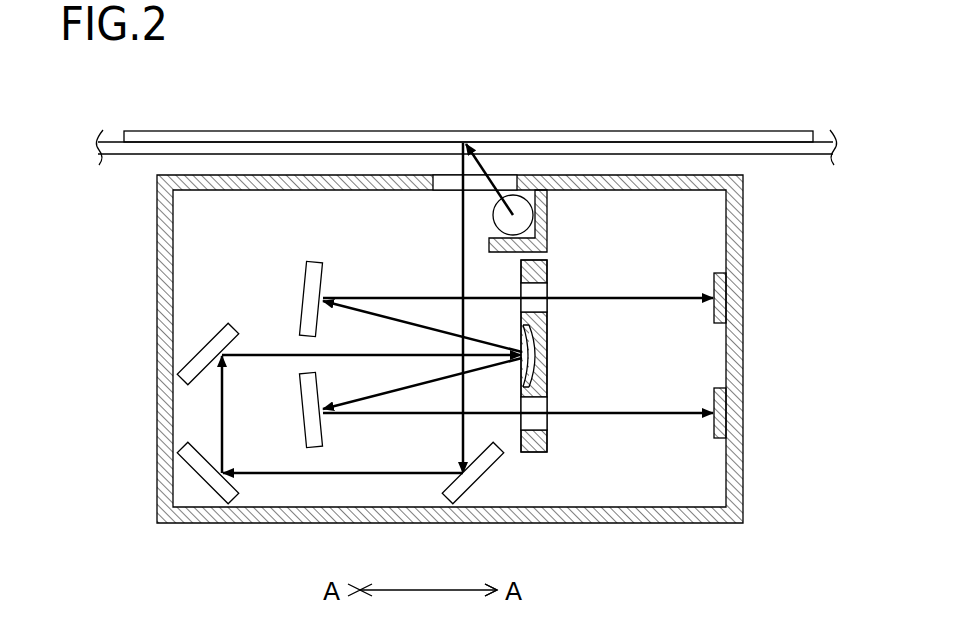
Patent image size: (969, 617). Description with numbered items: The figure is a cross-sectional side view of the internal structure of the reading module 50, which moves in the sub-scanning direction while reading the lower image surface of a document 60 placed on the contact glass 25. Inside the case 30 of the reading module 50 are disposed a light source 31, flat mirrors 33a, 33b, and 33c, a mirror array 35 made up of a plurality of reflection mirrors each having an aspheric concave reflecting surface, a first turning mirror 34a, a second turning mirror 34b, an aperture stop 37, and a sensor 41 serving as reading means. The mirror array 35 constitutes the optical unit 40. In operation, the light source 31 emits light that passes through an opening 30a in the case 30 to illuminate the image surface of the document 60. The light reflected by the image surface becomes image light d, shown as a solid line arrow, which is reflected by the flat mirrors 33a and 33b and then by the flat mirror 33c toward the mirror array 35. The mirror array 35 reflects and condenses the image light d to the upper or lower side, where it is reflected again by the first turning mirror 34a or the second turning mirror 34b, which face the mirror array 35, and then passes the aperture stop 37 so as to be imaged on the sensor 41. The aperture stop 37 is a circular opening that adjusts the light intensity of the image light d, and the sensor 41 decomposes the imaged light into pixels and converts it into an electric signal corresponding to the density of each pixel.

The contact glass 25 is at (114, 149).
The document 60 is at (740, 131).
The reading module 50 is at (758, 243).
The case 30 is at (744, 418).
The opening 30a is at (444, 177).
The light source 31 is at (523, 214).
The flat mirror 33a is at (472, 477).
The flat mirror 33b is at (210, 476).
The flat mirror 33c is at (208, 354).
The first turning mirror 34a is at (308, 300).
The second turning mirror 34b is at (308, 410).
The mirror array 35 is at (540, 357).
The aperture stop 37 is at (548, 307).
The optical unit 40 is at (548, 270).
The sensor 41 is at (716, 450).
The image light d is at (462, 246).